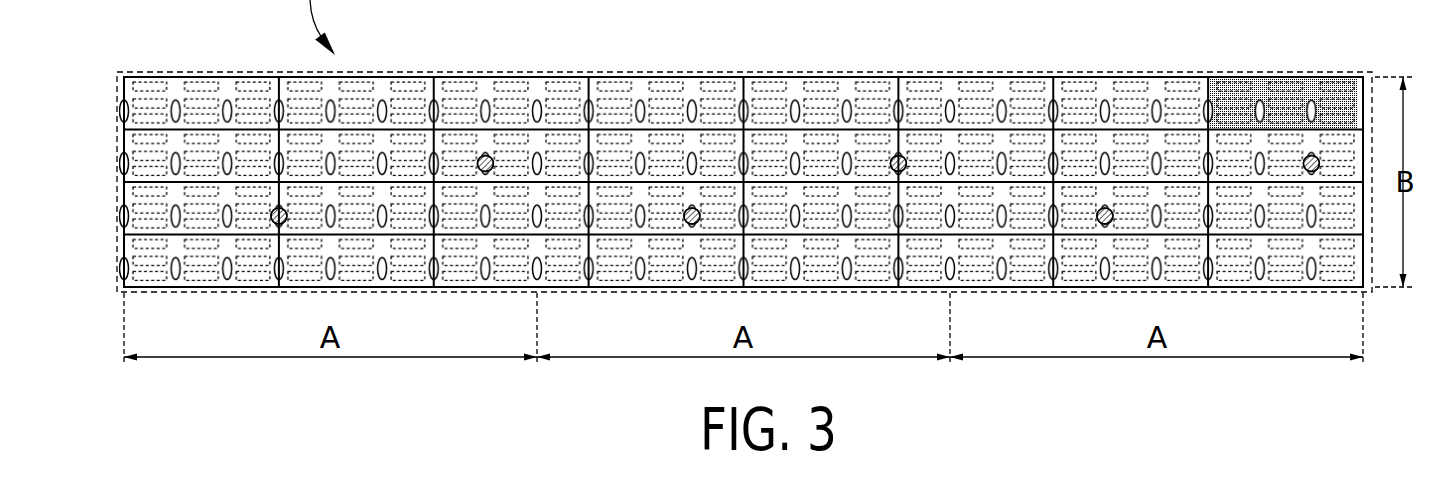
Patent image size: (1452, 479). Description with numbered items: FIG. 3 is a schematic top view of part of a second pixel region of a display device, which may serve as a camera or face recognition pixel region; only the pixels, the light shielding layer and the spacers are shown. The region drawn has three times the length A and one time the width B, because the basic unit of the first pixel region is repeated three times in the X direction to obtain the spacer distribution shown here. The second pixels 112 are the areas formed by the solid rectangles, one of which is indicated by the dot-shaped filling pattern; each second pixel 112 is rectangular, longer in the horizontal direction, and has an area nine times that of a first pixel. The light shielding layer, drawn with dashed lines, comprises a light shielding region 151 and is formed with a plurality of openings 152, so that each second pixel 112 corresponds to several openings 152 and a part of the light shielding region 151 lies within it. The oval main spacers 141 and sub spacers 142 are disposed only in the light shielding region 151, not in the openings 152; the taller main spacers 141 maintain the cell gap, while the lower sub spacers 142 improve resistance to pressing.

The second pixel 112 is at (1364, 102).
The main spacer 141 is at (1313, 156).
The sub spacer 142 is at (1157, 100).
The light shielding region 151 is at (124, 142).
The opening 152 is at (138, 242).